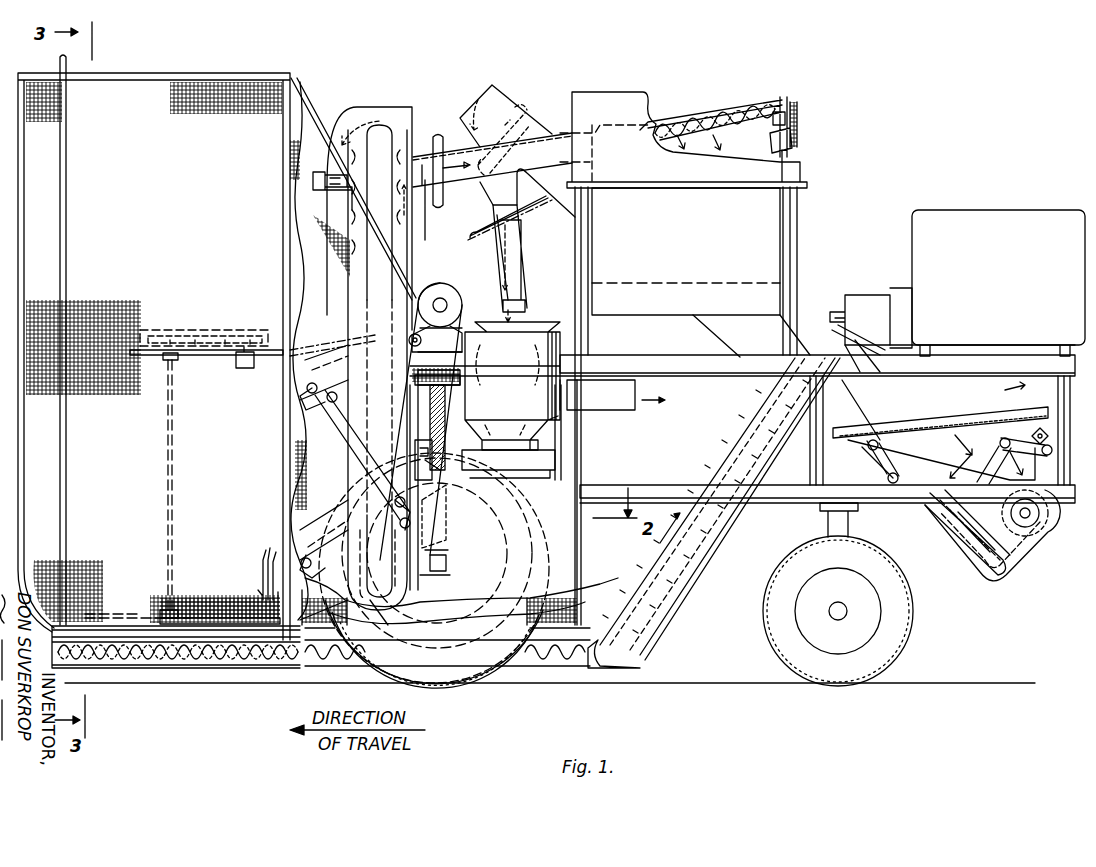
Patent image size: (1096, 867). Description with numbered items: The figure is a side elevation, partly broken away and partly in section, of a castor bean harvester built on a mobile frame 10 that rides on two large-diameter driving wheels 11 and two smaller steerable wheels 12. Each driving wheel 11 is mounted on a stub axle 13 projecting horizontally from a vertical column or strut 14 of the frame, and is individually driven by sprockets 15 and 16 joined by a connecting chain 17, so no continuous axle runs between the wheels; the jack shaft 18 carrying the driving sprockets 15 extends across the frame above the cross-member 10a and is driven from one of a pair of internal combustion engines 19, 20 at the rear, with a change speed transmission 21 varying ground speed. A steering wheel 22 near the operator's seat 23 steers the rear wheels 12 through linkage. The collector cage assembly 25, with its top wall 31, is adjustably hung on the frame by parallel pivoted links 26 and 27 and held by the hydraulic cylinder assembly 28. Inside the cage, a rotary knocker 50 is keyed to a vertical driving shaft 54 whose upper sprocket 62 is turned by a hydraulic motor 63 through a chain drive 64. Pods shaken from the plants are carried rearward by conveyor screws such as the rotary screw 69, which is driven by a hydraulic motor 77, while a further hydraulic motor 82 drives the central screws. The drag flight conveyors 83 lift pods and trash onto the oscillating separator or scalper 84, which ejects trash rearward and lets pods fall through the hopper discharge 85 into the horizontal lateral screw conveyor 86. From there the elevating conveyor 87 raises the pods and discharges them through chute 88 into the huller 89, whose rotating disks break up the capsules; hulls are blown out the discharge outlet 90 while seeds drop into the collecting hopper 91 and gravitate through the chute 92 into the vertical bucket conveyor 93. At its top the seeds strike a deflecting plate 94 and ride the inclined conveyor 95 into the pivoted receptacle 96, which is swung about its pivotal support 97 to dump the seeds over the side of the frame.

The mobile frame 10 is at (767, 513).
The cross-member 10a is at (408, 340).
The driving wheel 11 is at (443, 683).
The steerable wheel 12 is at (902, 637).
The stub axle 13 is at (426, 568).
The vertical column or strut 14 is at (455, 572).
The driving sprocket 15 is at (444, 294).
The sprocket 16 is at (505, 560).
The connecting chain 17 is at (500, 526).
The jack shaft 18 is at (440, 300).
The internal combustion engine 19 is at (987, 262).
The internal combustion engine 20 is at (1002, 212).
The change speed transmission 21 is at (858, 302).
The steering wheel 22 is at (436, 135).
The operator's seat 23 is at (540, 224).
The collector cage assembly 25 is at (200, 72).
The parallel pivoted link 26 is at (368, 366).
The parallel pivoted link 27 is at (382, 536).
The hydraulic cylinder assembly 28 is at (350, 465).
The top wall 31 is at (132, 72).
The rotary knocker 50 is at (140, 612).
The vertical driving shaft 54 is at (178, 468).
The sprocket 62 is at (158, 330).
The hydraulic motor 63 is at (245, 370).
The chain drive 64 is at (207, 334).
The rotary screw 69 is at (210, 660).
The hydraulic motor 77 is at (250, 598).
The hydraulic motor 82 is at (262, 575).
The drag flight conveyor 83 is at (665, 612).
The oscillating separator or scalper 84 is at (963, 422).
The hopper discharge 85 is at (1047, 510).
The horizontal lateral screw conveyor 86 is at (1042, 538).
The elevating conveyor 87 is at (965, 545).
The chute 88 is at (515, 272).
The huller 89 is at (552, 330).
The discharge outlet 90 is at (612, 400).
The collecting hopper 91 is at (556, 458).
The chute 92 is at (460, 530).
The bucket conveyor 93 is at (385, 130).
The deflecting plate 94 is at (313, 183).
The inclined conveyor 95 is at (718, 127).
The pivoted receptacle 96 is at (768, 215).
The pivotal support 97 is at (688, 124).